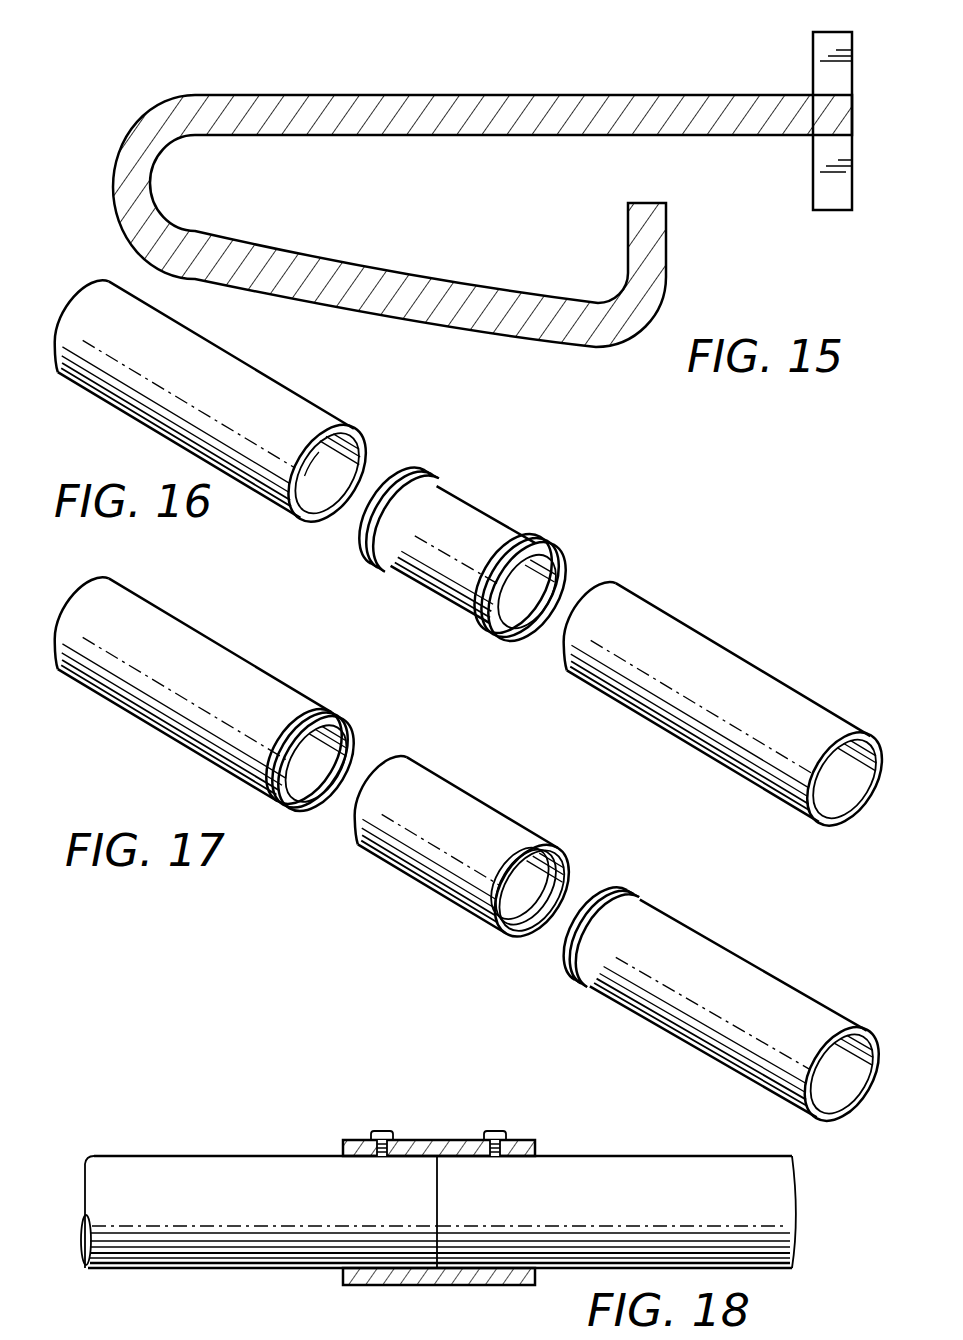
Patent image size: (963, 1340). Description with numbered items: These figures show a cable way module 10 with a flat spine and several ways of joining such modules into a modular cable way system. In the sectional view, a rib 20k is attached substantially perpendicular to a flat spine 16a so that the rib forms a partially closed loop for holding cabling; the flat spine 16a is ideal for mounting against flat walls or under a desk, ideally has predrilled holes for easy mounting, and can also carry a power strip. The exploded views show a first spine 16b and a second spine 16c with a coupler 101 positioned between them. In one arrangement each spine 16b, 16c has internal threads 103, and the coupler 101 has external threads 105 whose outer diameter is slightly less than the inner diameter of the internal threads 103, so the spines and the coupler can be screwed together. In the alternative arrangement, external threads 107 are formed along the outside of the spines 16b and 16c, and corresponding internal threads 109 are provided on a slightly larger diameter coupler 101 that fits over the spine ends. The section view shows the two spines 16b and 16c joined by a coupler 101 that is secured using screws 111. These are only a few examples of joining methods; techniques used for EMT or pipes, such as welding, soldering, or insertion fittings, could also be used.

In FIG. 15, the cable way module 10 is at (466, 181).
In FIG. 15, the rib 20k is at (378, 94).
In FIG. 15, the flat spine 16a is at (814, 32).
In FIG. 16, the first spine 16b is at (258, 372).
In FIG. 17, the first spine 16b is at (258, 670).
In FIG. 18, the first spine 16b is at (183, 1155).
In FIG. 16, the second spine 16c is at (704, 629).
In FIG. 17, the second spine 16c is at (703, 930).
In FIG. 18, the second spine 16c is at (634, 1156).
In FIG. 16, the coupler 101 is at (483, 498).
In FIG. 17, the coupler 101 is at (485, 800).
In FIG. 18, the coupler 101 is at (408, 1285).
In FIG. 16, the internal threads 103 is at (305, 487).
In FIG. 16, the external threads 105 is at (421, 471).
In FIG. 17, the external threads 107 is at (334, 718).
In FIG. 17, the internal threads 109 is at (567, 864).
In FIG. 18, the screws 111 is at (382, 1131).